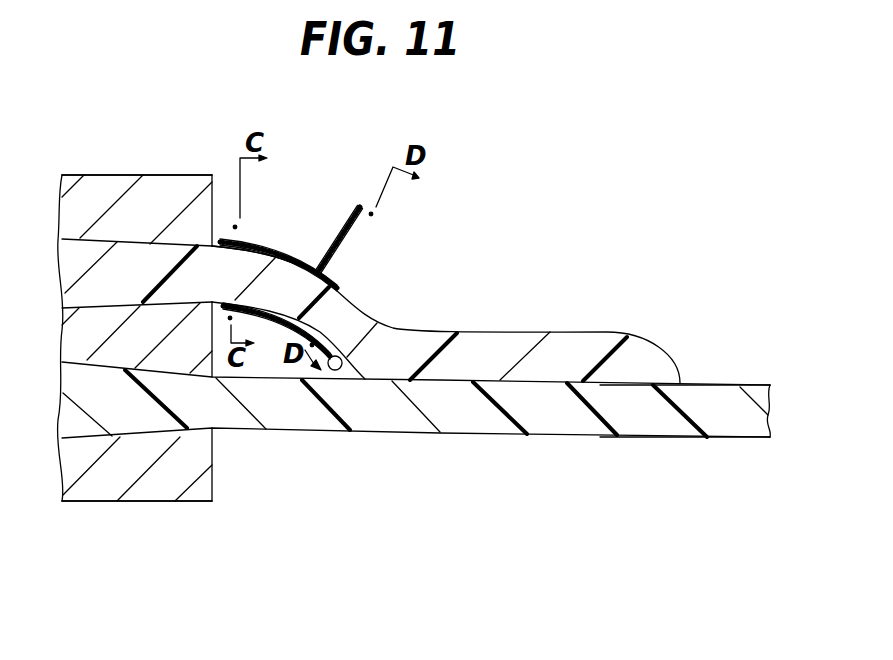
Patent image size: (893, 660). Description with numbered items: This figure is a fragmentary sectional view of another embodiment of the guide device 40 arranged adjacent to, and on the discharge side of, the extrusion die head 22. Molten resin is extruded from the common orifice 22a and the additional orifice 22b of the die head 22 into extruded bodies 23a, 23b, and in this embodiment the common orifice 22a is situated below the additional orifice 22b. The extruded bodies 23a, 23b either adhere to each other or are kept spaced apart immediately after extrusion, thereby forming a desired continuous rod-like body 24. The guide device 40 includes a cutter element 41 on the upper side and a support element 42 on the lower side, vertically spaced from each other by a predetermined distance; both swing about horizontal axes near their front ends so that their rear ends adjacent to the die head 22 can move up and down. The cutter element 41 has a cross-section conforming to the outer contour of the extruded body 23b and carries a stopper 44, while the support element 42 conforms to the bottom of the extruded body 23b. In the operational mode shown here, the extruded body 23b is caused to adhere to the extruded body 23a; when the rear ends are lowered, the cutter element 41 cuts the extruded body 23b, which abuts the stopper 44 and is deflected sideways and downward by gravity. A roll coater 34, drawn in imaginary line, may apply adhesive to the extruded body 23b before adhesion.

The die head 22 is at (154, 172).
The common orifice 22a is at (82, 441).
The additional orifice 22b is at (83, 235).
The extruded body 23a is at (422, 434).
The extruded body 23b is at (373, 332).
The continuous rod-like body 24 is at (709, 445).
The roll coater 34 is at (337, 371).
The guide device 40 is at (329, 155).
The cutter element 41 is at (279, 246).
The support element 42 is at (259, 325).
The stopper 44 is at (350, 236).